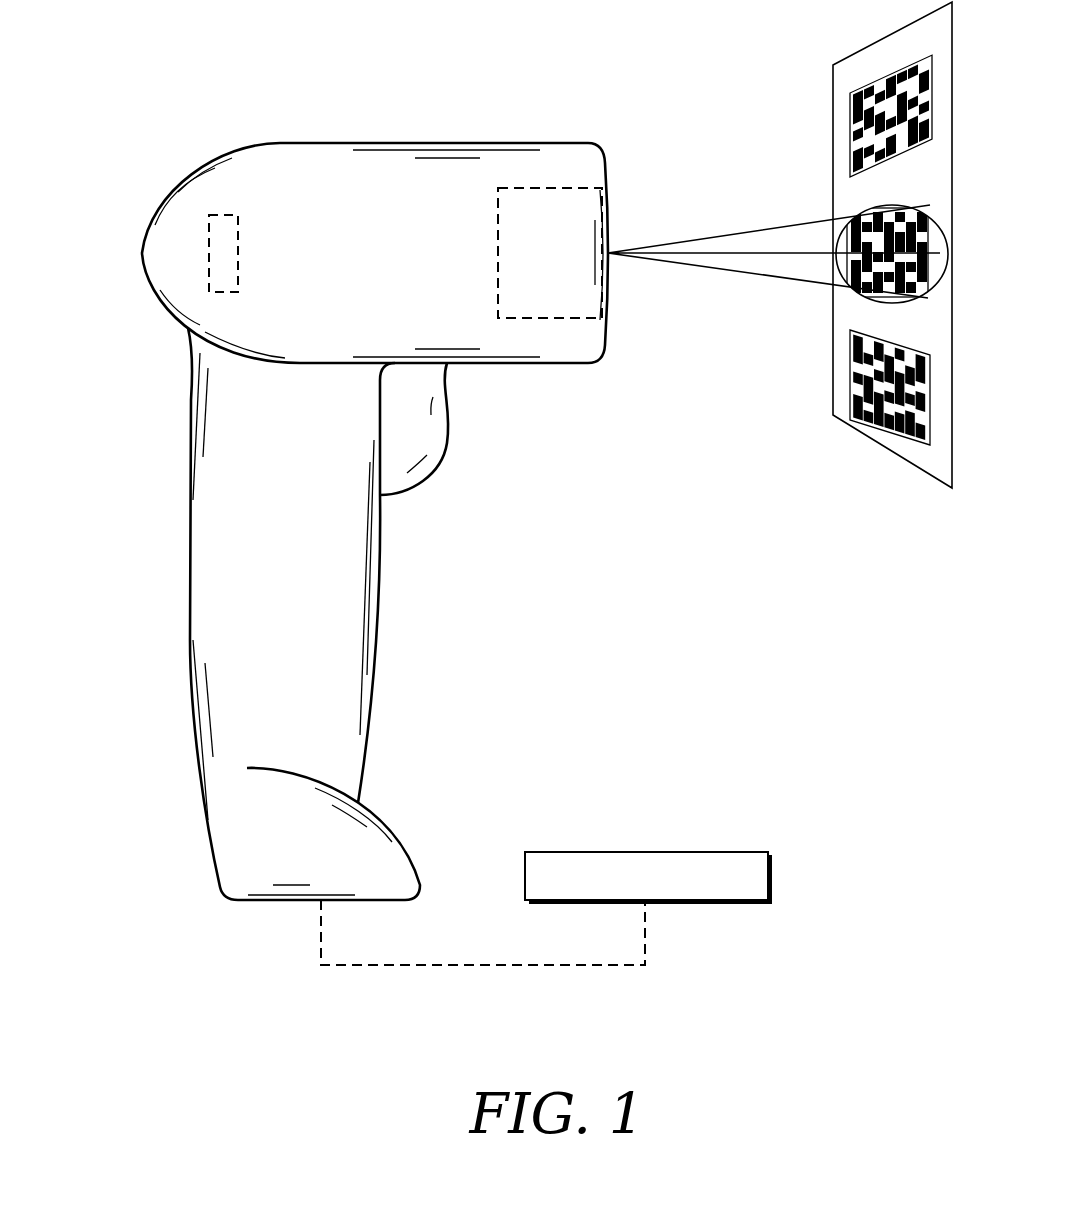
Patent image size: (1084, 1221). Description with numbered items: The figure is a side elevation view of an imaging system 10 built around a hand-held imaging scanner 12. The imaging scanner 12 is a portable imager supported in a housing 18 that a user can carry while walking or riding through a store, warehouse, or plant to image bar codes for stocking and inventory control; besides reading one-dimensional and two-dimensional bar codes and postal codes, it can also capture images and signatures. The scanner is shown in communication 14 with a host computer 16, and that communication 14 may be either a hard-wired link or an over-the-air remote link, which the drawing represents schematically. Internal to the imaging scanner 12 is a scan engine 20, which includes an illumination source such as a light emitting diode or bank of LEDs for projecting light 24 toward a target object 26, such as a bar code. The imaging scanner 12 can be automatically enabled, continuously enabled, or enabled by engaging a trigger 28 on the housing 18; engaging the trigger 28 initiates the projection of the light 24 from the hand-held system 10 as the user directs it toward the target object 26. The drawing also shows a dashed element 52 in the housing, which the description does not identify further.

The imaging system 10 is at (340, 496).
The imaging scanner 12 is at (446, 143).
The communication 14 is at (322, 932).
The host computer 16 is at (750, 852).
The housing 18 is at (380, 563).
The scan engine 20 is at (498, 255).
The light 24 is at (755, 282).
The target object 26 is at (893, 205).
The trigger 28 is at (435, 440).
The indicator 52 is at (238, 253).